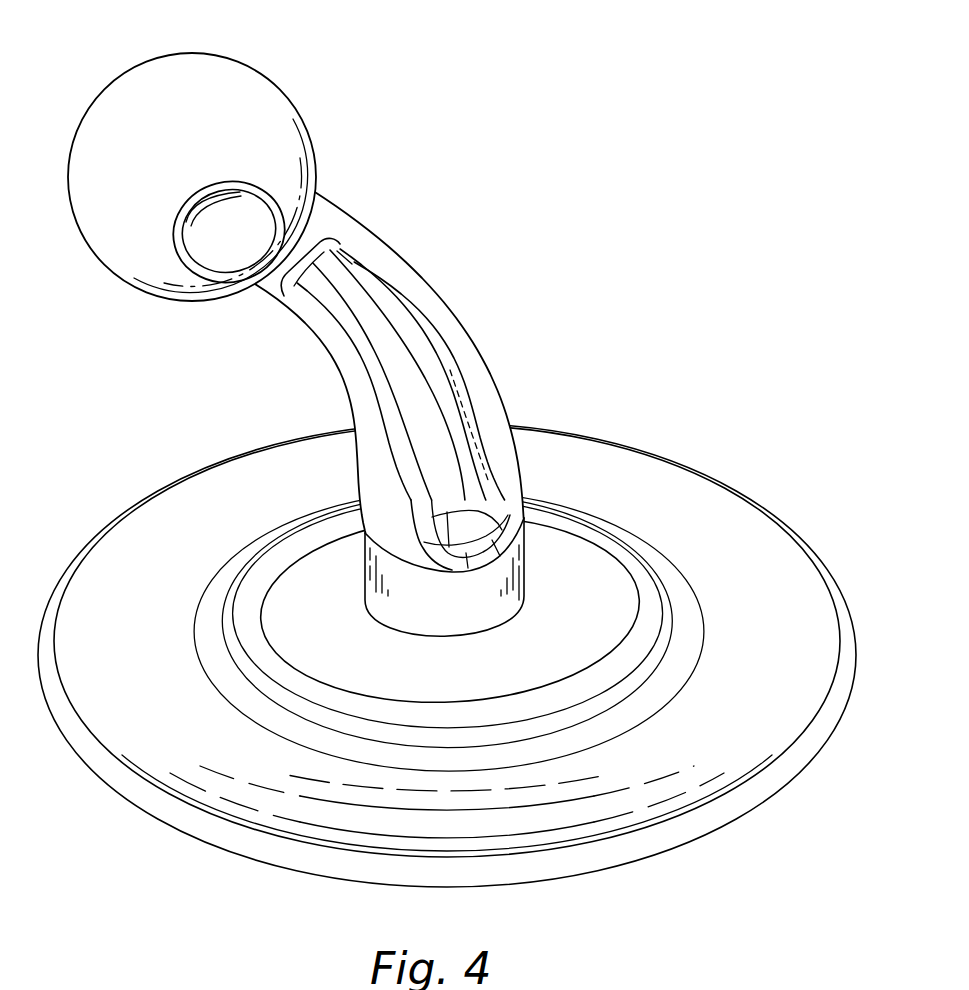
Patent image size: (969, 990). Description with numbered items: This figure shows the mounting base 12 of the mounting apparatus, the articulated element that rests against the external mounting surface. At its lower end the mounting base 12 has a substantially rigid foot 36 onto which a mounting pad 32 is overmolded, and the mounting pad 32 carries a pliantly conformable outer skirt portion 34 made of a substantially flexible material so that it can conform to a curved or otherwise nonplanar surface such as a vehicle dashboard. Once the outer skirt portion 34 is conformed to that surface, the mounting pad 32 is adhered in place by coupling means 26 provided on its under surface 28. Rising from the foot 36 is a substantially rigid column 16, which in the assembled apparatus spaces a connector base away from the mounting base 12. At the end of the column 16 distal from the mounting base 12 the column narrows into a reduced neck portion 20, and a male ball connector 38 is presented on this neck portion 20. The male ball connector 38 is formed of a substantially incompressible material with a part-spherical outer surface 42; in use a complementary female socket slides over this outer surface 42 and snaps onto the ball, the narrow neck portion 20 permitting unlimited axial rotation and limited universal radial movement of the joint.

The mounting base 12 is at (494, 160).
The column 16 is at (462, 326).
The reduced neck portion 20 is at (344, 215).
The coupling means 26 is at (617, 868).
The under surface 28 is at (697, 842).
The mounting pad 32 is at (310, 535).
The pliantly conformable outer skirt portion 34 is at (652, 470).
The foot 36 is at (447, 641).
The male ball connector 38 is at (190, 172).
The part-spherical outer surface 42 is at (244, 80).